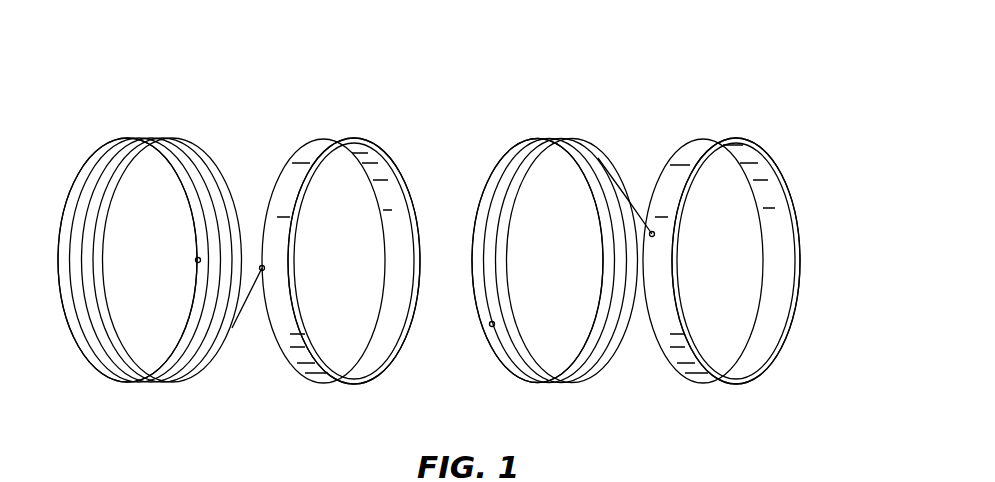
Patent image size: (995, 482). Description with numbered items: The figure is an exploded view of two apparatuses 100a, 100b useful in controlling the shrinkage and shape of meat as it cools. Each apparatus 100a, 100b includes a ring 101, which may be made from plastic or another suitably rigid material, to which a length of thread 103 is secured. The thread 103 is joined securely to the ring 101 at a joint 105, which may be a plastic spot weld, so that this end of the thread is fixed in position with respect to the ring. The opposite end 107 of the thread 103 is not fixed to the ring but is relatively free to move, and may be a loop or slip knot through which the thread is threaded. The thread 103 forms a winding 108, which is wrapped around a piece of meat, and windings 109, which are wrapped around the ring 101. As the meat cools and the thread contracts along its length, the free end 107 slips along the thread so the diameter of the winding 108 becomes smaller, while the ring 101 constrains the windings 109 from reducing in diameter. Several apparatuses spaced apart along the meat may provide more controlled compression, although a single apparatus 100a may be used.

The apparatus 100a is at (221, 84).
The apparatus 100b is at (711, 84).
The ring 101 is at (408, 188).
The thread 103 is at (113, 385).
The joint 105 is at (264, 268).
The opposite end 107 is at (196, 260).
The winding 108 is at (81, 352).
The windings 109 is at (128, 143).